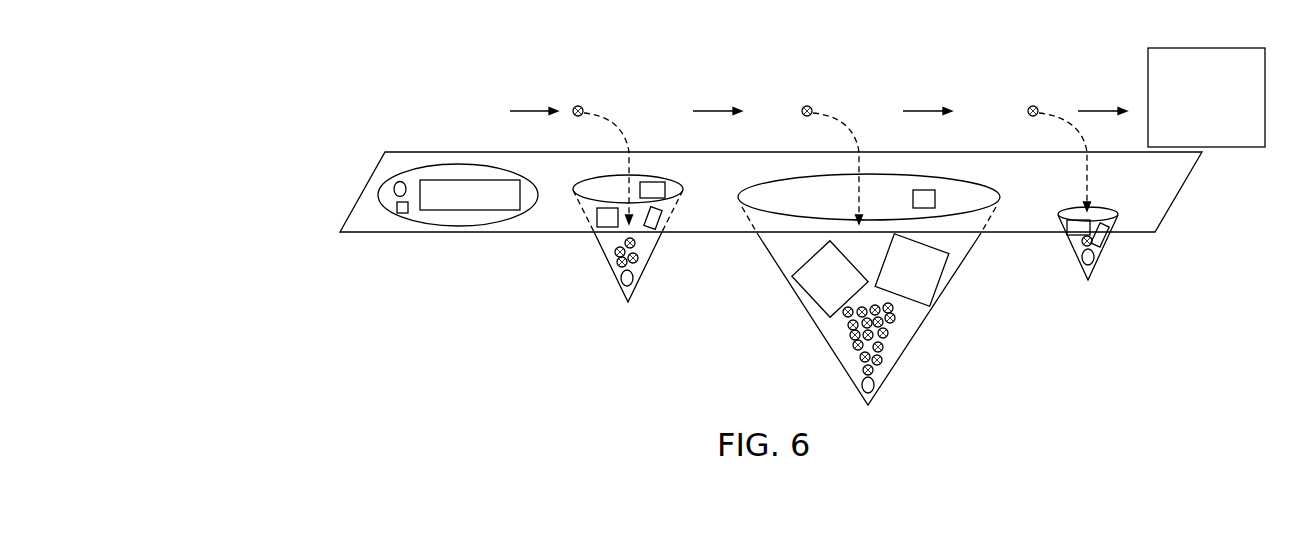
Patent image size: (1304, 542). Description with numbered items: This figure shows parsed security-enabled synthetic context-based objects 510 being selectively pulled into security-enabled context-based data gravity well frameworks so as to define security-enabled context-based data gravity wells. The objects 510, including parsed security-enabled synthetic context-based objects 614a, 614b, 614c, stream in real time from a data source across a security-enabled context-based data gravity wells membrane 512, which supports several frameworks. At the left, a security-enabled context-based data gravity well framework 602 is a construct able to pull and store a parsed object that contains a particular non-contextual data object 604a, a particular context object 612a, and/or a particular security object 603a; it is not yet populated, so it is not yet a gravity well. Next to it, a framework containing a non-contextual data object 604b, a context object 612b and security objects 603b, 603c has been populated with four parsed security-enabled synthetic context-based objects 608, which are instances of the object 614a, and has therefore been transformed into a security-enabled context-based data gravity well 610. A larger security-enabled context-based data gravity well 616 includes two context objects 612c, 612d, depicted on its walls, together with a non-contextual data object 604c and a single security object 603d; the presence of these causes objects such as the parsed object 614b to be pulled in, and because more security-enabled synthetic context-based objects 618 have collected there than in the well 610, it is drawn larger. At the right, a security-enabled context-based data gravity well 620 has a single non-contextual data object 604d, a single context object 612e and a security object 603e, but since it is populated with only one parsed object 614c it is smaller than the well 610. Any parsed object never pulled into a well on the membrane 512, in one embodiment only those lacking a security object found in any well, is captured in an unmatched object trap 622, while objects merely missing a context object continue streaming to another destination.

The parsed security-enabled synthetic context-based objects 510 is at (372, 90).
The security-enabled context-based data gravity wells membrane 512 is at (1174, 180).
The security-enabled context-based data gravity well framework 602 is at (462, 226).
The security object 603a is at (396, 213).
The security object 603b is at (597, 227).
The security object 603c is at (665, 190).
The security object 603d is at (935, 197).
The security object 603e is at (1070, 220).
The non-contextual data object 604a is at (393, 190).
The non-contextual data object 604b is at (620, 282).
The non-contextual data object 604c is at (862, 390).
The non-contextual data object 604d is at (1087, 266).
The parsed security-enabled synthetic context-based objects 608 is at (638, 258).
The security-enabled context-based data gravity well 610 is at (651, 302).
The context object 612a is at (505, 178).
The context object 612b is at (662, 222).
The context object 612c is at (806, 298).
The context object 612d is at (937, 284).
The context object 612e is at (1108, 238).
The parsed security-enabled synthetic context-based object 614a is at (578, 106).
The parsed security-enabled synthetic context-based object 614b is at (807, 106).
The parsed security-enabled synthetic context-based object 614c is at (1033, 106).
The security-enabled context-based data gravity well 616 is at (939, 333).
The security-enabled synthetic context-based objects 618 is at (853, 344).
The security-enabled context-based data gravity well 620 is at (1106, 273).
The unmatched object trap 622 is at (1213, 48).